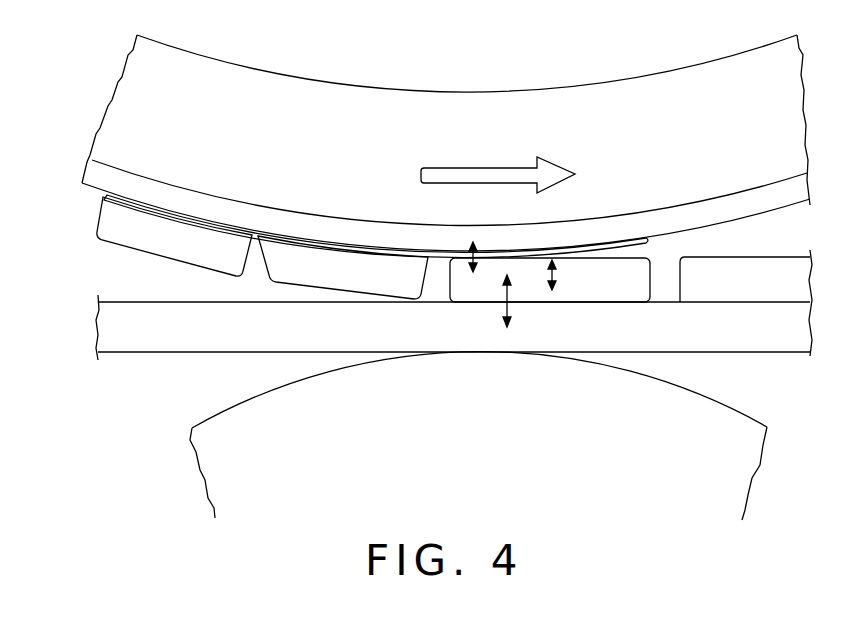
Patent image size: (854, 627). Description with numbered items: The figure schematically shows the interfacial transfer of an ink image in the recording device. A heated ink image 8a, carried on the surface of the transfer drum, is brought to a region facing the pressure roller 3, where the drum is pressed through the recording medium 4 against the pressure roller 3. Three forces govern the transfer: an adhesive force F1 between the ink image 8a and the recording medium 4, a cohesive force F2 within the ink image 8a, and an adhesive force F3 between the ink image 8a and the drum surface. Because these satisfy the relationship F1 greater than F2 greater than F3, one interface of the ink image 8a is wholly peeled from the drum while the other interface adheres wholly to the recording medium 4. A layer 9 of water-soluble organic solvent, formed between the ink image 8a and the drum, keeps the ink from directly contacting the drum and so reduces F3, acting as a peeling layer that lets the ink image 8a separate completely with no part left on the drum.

The pressure roller 3 is at (227, 437).
The recording medium 4 is at (163, 342).
The ink image 8a is at (130, 240).
The layer of water-soluble organic solvent 9 is at (122, 203).
The adhesive force between the ink image and the recording medium F1 is at (527, 309).
The cohesive force of the ink image F2 is at (571, 279).
The adhesive force between the ink image and the transfer drum surface F3 is at (468, 241).